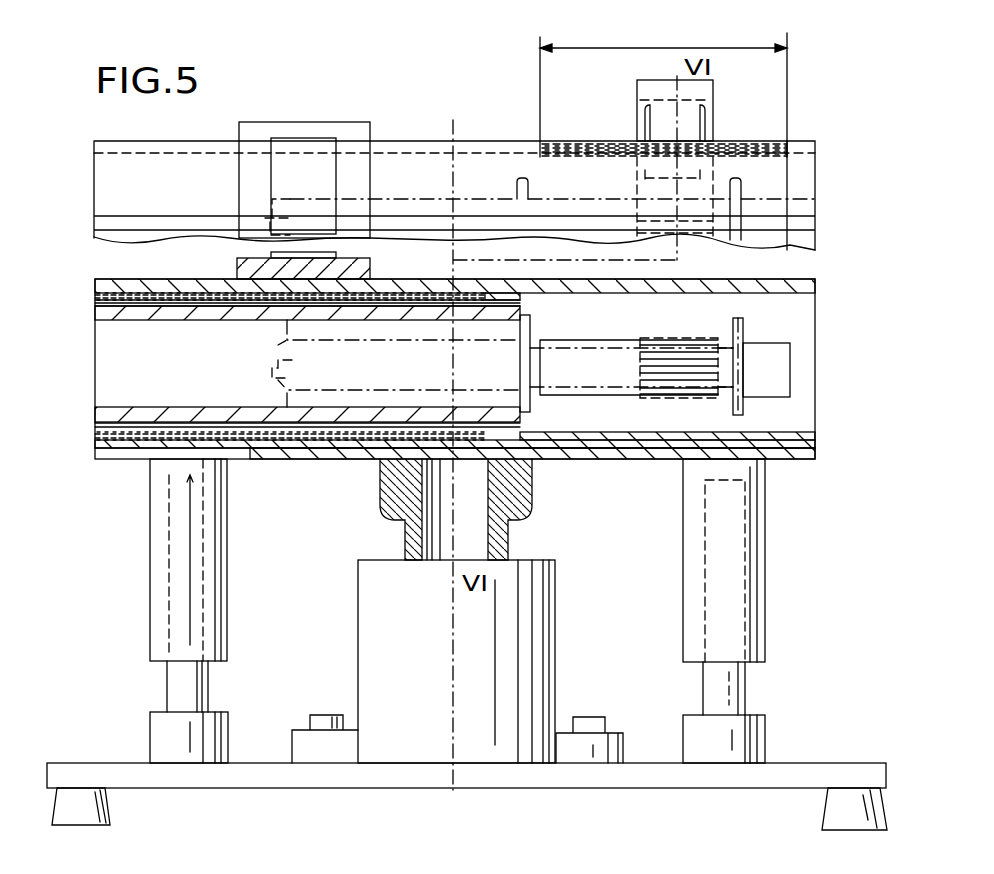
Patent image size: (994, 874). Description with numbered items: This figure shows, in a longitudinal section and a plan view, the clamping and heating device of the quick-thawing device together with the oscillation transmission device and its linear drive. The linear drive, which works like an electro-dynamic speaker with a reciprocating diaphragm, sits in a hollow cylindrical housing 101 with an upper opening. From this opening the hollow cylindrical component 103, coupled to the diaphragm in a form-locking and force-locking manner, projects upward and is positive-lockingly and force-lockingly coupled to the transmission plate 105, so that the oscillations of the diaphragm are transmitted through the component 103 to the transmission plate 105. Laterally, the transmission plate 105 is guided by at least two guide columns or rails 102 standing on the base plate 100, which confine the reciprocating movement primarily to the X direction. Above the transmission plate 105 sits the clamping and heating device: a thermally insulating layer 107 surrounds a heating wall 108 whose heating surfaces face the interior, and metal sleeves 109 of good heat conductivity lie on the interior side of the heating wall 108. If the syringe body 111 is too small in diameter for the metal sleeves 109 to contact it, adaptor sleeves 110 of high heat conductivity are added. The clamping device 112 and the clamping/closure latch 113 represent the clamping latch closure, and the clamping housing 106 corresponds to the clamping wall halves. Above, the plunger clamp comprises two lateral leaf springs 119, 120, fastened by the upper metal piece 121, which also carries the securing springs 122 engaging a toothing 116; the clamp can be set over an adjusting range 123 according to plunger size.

The base plate 100 is at (655, 782).
The hollow cylindrical housing 101 is at (377, 645).
The guide columns or rails 102 is at (735, 690).
The hollow cylindrical component 103 is at (385, 490).
The transmission plate 105 is at (566, 452).
The clamping housing 106 is at (110, 286).
The thermally insulating layer 107 is at (195, 288).
The heating wall 108 is at (128, 302).
The metal sleeves 109 is at (165, 313).
The adaptor sleeves 110 is at (505, 400).
The syringe body 111 is at (287, 378).
The clamping device 112 is at (253, 180).
The clamping/closure latch 113 is at (297, 162).
The toothing 116 is at (770, 343).
The leaf spring 119 is at (637, 120).
The leaf spring 120 is at (713, 134).
The upper metal piece 121 is at (713, 92).
The securing springs 122 is at (700, 106).
The adjusting range 123 is at (651, 48).